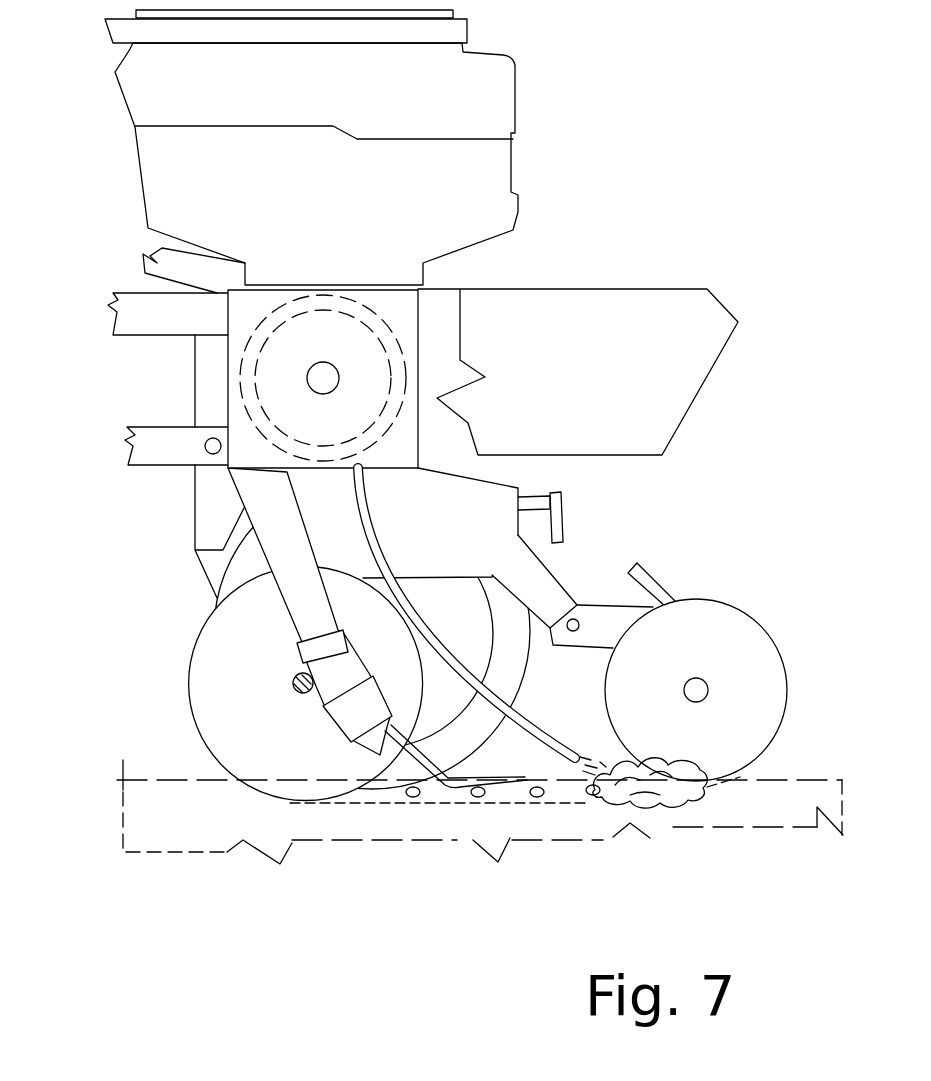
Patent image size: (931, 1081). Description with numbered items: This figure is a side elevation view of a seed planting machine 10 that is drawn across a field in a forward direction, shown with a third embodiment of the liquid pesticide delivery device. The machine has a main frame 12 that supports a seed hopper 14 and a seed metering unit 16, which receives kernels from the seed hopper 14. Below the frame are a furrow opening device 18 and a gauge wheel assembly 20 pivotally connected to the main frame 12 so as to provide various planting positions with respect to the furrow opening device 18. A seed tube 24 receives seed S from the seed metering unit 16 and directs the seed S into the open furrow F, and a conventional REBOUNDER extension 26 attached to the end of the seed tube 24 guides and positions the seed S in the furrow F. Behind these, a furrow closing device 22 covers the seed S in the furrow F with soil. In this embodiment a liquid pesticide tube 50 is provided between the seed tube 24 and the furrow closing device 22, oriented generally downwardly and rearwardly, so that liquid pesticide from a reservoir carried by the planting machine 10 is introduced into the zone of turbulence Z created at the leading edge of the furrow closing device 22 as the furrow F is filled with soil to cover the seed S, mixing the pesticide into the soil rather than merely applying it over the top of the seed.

The seed planting machine 10 is at (442, 459).
The main frame 12 is at (598, 386).
The seed hopper 14 is at (323, 207).
The seed metering unit 16 is at (375, 345).
The furrow opening device 18 is at (254, 687).
The gauge wheel assembly 20 is at (437, 754).
The furrow closing device 22 is at (677, 660).
The seed tube 24 is at (252, 488).
The REBOUNDER extension 26 is at (410, 740).
The liquid pesticide tube 50 is at (477, 678).
The seed S is at (475, 797).
The furrow F is at (570, 803).
The zone of turbulence Z is at (643, 777).